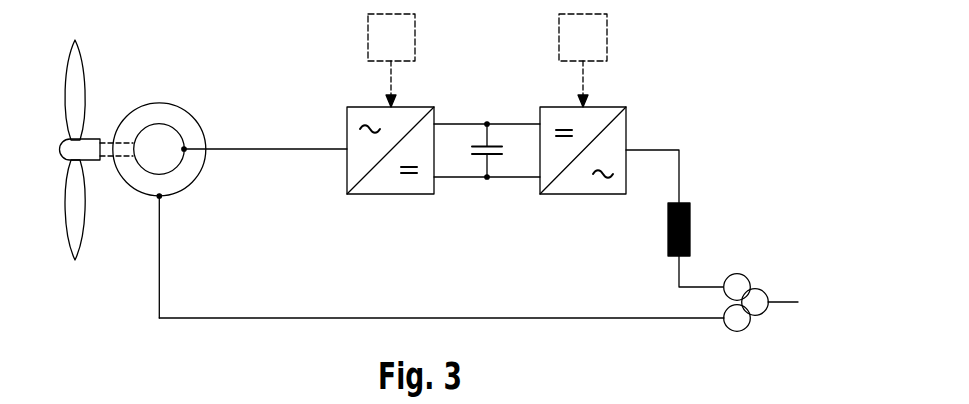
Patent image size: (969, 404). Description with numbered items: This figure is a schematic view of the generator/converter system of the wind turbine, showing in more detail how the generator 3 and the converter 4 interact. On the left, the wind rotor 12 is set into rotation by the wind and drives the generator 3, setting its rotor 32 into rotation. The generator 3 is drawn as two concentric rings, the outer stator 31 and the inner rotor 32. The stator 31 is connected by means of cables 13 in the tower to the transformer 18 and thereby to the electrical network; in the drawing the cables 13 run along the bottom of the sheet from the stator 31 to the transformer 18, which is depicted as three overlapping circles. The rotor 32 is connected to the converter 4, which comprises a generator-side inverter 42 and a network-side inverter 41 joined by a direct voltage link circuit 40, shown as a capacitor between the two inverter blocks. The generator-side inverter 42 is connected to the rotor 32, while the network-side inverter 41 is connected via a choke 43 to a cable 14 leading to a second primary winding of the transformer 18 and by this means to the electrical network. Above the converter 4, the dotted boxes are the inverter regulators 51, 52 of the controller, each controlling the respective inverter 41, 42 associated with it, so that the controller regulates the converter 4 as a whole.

The generator 3 is at (134, 96).
The wind rotor 12 is at (88, 155).
The cables 13 is at (528, 317).
The cable 14 is at (678, 273).
The transformer 18 is at (760, 282).
The stator 31 is at (193, 115).
The rotor 32 is at (158, 124).
The converter 4 is at (502, 197).
The direct voltage link circuit 40 is at (463, 124).
The network-side inverter 41 is at (626, 118).
The generator-side inverter 42 is at (347, 127).
The choke 43 is at (668, 232).
The inverter regulator 51 is at (607, 37).
The inverter regulator 52 is at (418, 33).